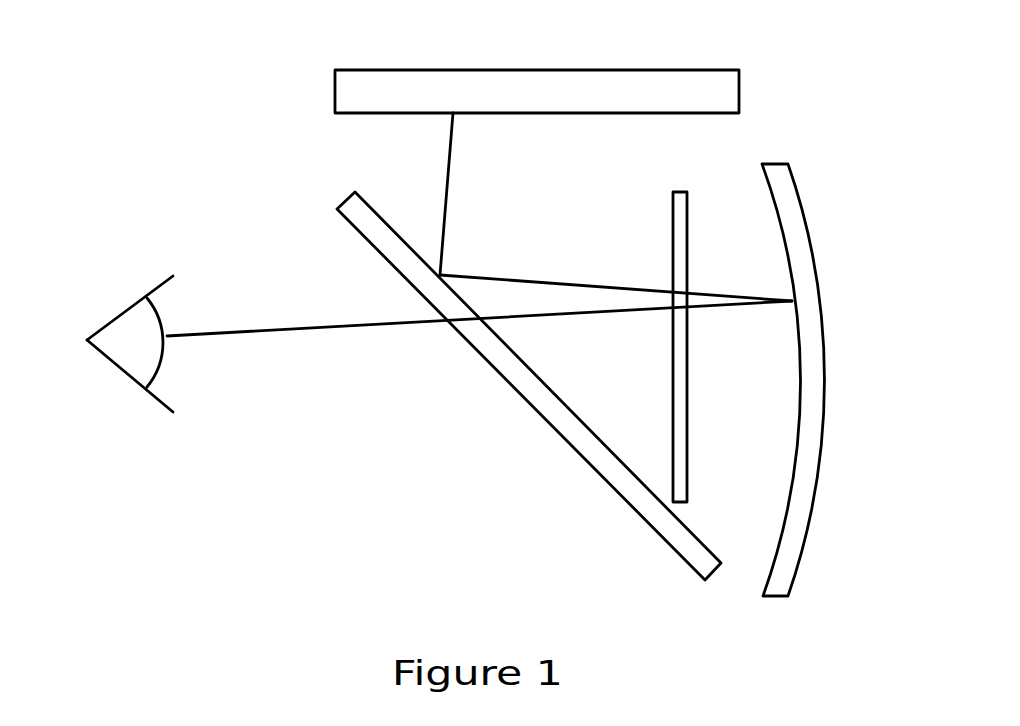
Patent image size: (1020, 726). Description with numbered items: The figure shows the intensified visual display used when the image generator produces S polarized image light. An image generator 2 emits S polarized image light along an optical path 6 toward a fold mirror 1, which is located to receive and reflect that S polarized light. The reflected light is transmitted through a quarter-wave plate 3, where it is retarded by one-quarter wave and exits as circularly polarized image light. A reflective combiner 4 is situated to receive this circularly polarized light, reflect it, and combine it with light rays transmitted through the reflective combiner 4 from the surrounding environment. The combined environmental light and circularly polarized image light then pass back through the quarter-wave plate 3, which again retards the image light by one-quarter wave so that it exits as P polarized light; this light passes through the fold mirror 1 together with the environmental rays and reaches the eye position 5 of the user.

The fold mirror 1 is at (493, 372).
The image generator 2 is at (335, 85).
The quarter-wave plate 3 is at (666, 239).
The reflective combiner 4 is at (828, 342).
The eye position 5 is at (118, 375).
The optical path 6 is at (455, 129).